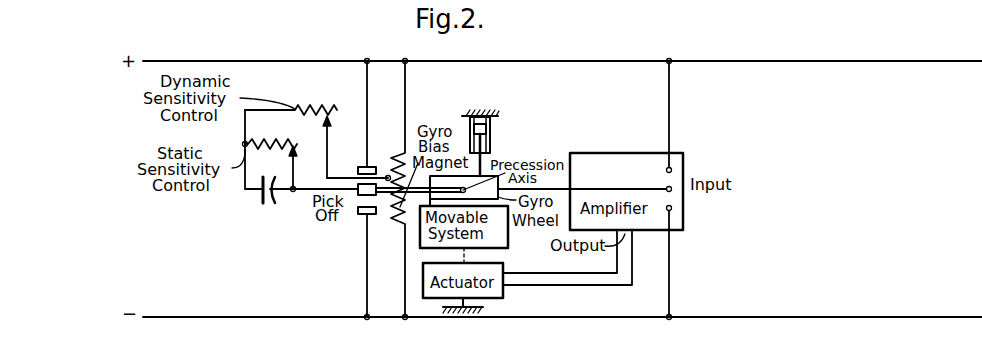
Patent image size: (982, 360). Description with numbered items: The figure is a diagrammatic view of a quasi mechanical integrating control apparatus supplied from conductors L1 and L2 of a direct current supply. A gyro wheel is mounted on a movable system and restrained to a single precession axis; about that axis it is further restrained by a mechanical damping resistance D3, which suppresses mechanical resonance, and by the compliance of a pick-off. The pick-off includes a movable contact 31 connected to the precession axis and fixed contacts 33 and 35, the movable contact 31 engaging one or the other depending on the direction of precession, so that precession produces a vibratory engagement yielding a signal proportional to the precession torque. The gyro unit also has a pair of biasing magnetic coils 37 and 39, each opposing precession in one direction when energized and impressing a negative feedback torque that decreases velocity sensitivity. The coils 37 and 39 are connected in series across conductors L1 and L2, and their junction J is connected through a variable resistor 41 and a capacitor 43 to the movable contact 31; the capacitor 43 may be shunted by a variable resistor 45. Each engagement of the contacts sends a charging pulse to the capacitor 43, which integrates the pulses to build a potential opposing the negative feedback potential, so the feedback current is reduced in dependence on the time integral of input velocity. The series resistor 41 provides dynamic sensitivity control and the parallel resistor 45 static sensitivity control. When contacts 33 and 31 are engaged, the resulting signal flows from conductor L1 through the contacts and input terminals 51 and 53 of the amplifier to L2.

The movable contact 31 is at (338, 188).
The fixed contact 33 is at (367, 166).
The fixed contact 35 is at (372, 215).
The biasing magnetic coil 37 is at (394, 153).
The biasing magnetic coil 39 is at (403, 228).
The variable resistor 41 is at (300, 115).
The capacitor 43 is at (273, 190).
The variable resistor 45 is at (288, 141).
The input terminal 51 is at (671, 192).
The input terminal 53 is at (671, 210).
The conductor L1 is at (175, 61).
The conductor L2 is at (160, 318).
The mechanical damping resistance D3 is at (480, 132).
The junction J is at (386, 176).